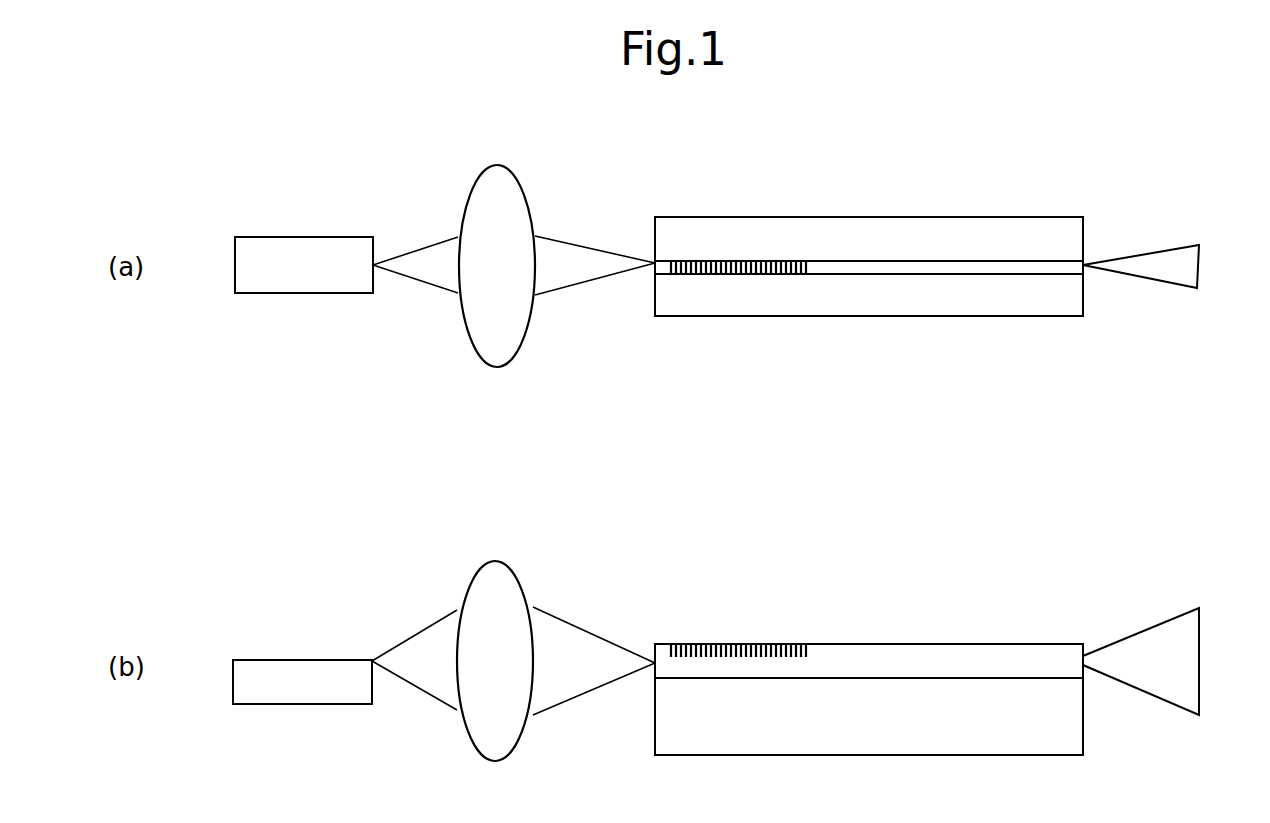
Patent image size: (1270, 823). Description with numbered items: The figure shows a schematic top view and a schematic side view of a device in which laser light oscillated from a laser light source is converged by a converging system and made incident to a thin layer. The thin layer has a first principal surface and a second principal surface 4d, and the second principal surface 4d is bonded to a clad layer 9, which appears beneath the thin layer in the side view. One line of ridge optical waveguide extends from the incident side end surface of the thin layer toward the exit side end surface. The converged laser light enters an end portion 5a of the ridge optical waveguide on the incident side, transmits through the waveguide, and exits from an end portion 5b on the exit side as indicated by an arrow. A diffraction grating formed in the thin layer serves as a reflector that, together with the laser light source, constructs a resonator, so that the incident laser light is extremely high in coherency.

The second principal surface 4d is at (920, 680).
The end portion 5a is at (660, 262).
The end portion 5b is at (1080, 266).
The clad layer 9 is at (1070, 718).